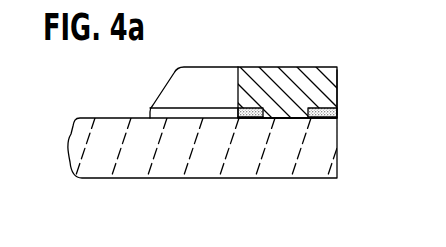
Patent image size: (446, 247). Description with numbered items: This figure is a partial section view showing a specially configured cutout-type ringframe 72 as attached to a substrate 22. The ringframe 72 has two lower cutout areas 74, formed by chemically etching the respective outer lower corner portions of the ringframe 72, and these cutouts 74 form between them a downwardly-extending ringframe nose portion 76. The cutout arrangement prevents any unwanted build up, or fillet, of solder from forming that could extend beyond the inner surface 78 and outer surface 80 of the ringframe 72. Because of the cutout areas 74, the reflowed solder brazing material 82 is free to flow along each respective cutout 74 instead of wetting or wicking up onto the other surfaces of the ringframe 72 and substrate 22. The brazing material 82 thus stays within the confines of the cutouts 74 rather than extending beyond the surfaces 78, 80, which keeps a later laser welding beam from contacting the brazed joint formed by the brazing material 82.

The substrate 22 is at (337, 163).
The cutout-type ringframe 72 is at (331, 42).
The lower cutout areas 74 is at (236, 107).
The ringframe nose portion 76 is at (287, 113).
The inner surface 78 is at (228, 67).
The outer surface 80 is at (337, 82).
The solder brazing material 82 is at (237, 117).